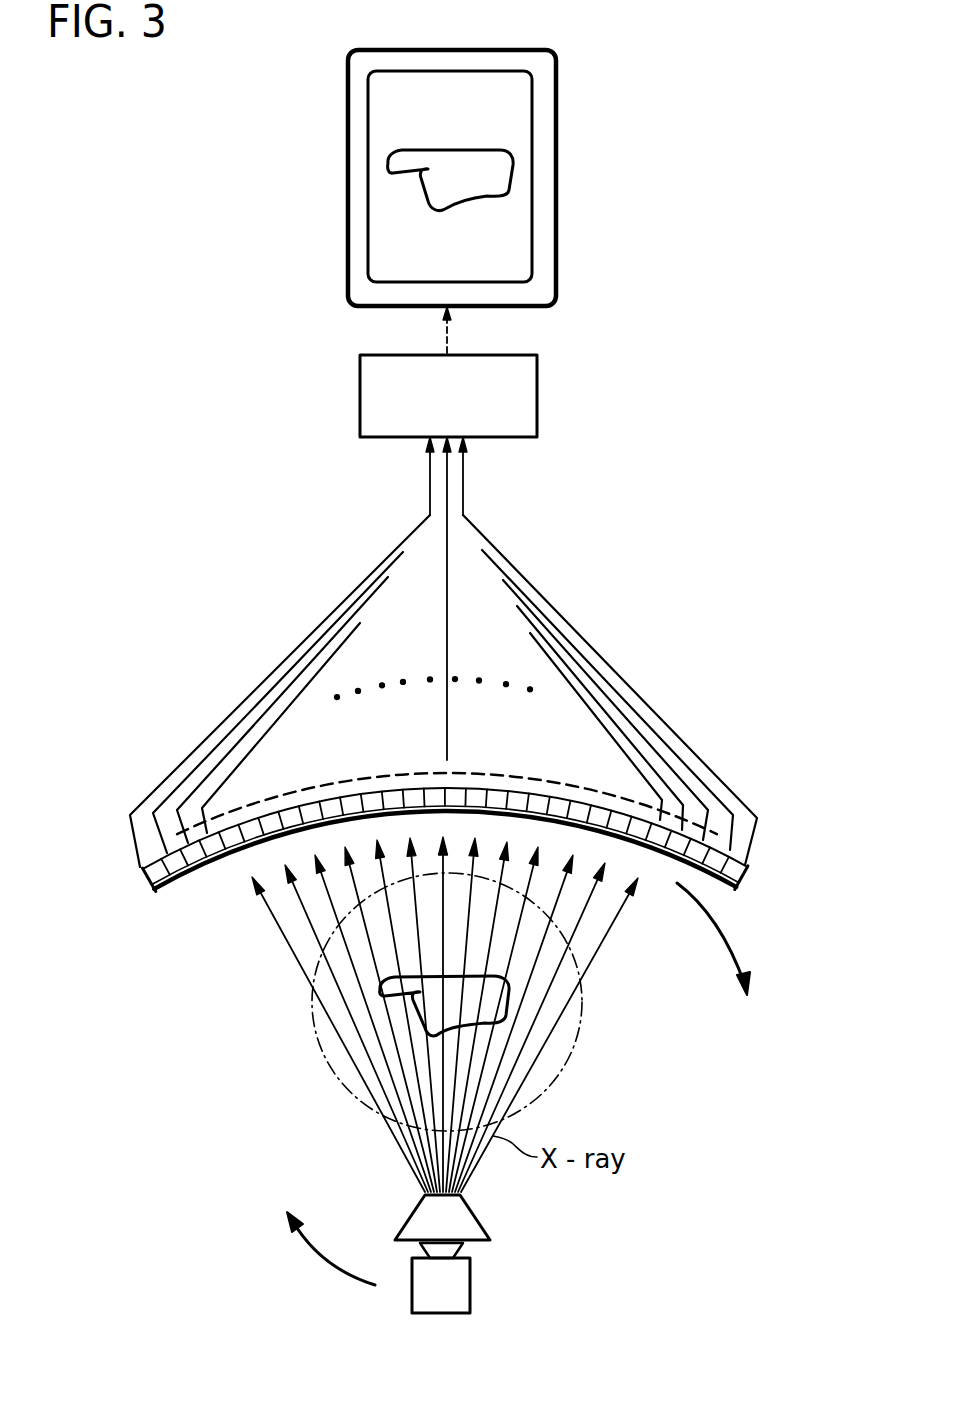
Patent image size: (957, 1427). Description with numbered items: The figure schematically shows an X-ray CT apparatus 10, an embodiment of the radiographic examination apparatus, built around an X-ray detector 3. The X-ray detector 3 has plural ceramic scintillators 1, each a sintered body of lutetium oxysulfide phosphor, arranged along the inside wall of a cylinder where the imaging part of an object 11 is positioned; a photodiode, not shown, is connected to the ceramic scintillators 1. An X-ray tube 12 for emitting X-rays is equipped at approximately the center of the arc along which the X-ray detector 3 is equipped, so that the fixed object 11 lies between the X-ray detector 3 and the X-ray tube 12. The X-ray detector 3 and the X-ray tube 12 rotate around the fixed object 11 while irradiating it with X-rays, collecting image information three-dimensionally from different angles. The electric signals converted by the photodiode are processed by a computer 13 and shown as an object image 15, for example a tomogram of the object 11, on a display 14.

The ceramic scintillator 1 is at (172, 868).
The X-ray detector 3 is at (140, 877).
The X-ray CT apparatus 10 is at (653, 478).
The object 11 is at (420, 1043).
The X-ray tube 12 is at (470, 1278).
The computer 13 is at (537, 394).
The display 14 is at (388, 218).
The object image 15 is at (503, 172).